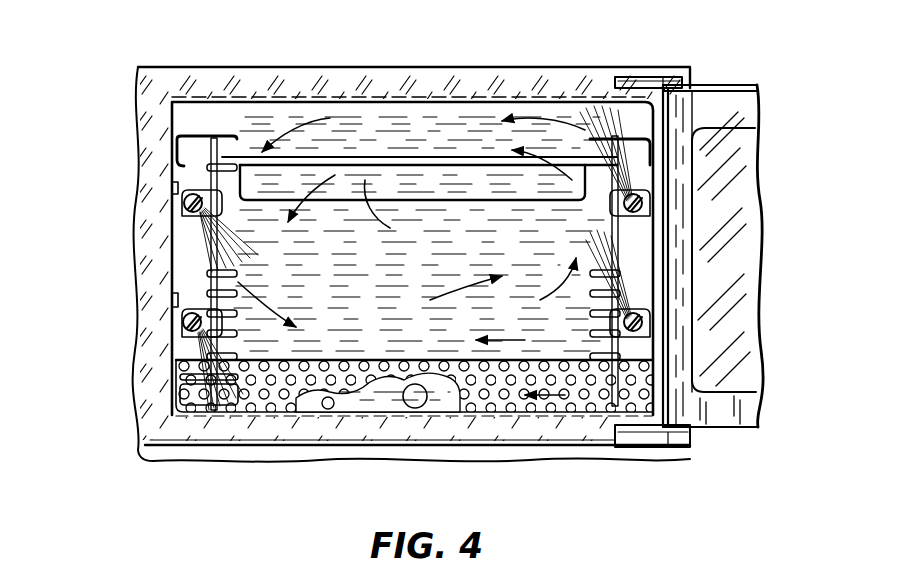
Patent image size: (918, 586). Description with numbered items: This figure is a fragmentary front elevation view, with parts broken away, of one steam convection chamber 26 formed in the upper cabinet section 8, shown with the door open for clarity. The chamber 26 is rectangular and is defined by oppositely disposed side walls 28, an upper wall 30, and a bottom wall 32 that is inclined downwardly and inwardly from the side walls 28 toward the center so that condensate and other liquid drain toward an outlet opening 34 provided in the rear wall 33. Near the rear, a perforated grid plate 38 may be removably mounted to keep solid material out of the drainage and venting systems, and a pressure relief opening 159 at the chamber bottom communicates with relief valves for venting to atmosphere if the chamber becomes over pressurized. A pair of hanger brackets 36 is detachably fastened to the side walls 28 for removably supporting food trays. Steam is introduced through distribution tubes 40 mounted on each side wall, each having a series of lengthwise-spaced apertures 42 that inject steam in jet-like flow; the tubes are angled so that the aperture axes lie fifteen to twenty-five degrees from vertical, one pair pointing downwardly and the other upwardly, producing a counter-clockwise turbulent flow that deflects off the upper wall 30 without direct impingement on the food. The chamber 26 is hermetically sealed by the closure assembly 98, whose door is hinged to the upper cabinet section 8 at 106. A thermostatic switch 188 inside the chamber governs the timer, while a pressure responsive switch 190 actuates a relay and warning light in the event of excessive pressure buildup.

The upper cabinet section 8 is at (366, 61).
The chamber 26 is at (426, 137).
The side walls 28 is at (655, 296).
The upper wall 30 is at (497, 102).
The bottom wall 32 is at (503, 418).
The rear wall 33 is at (233, 116).
The outlet opening 34 is at (420, 408).
The hanger brackets 36 is at (191, 130).
The perforated grid plate 38 is at (208, 408).
The distribution tubes 40 is at (183, 203).
The apertures 42 is at (196, 214).
The closure assembly 98 is at (740, 74).
The hinge mounting 106 is at (672, 76).
The pressure relief opening 159 is at (330, 410).
The thermostatic switch 188 is at (172, 186).
The pressure responsive switch 190 is at (172, 300).